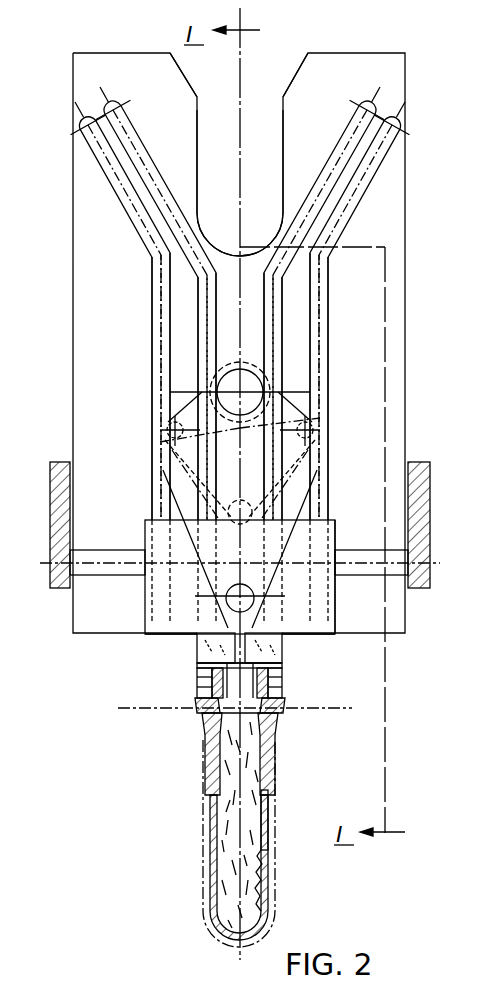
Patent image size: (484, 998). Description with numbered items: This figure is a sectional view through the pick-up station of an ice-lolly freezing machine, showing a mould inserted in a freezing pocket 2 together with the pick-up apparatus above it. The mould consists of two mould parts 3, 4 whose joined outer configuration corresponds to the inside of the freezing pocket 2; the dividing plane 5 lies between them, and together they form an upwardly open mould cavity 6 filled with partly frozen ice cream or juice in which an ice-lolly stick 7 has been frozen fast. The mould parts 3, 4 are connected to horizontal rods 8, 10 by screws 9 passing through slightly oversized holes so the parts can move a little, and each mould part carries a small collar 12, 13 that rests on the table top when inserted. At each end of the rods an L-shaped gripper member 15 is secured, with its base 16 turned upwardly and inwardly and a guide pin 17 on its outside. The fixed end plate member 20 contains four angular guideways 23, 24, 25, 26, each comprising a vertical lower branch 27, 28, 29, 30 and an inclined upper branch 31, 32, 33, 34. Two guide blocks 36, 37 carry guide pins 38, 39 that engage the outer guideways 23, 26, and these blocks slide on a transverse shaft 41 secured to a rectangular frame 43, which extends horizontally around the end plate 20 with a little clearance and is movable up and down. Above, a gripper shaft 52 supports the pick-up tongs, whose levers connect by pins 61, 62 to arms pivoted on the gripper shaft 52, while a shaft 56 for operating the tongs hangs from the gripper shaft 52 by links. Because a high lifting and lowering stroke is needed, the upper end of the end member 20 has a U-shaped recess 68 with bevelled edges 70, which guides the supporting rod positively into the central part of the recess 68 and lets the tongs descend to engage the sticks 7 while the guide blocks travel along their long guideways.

The freezing pocket 2 is at (266, 836).
The mould part 3 is at (210, 785).
The mould part 4 is at (278, 772).
The dividing plane 5 is at (255, 872).
The mould cavity 6 is at (262, 810).
The ice-lolly stick 7 is at (268, 678).
The horizontal rod 8 is at (215, 690).
The screw 9 is at (200, 684).
The rod 10 is at (281, 694).
The collar 12 is at (205, 712).
The collar 13 is at (285, 713).
The L-shaped gripper member 15 is at (200, 666).
The base 16 is at (239, 680).
The guide pin 17 is at (200, 650).
The end plate member 20 is at (397, 238).
The guideway 23 is at (152, 296).
The guideway 24 is at (205, 305).
The guideway 25 is at (273, 300).
The guideway 26 is at (320, 318).
The vertical lower branch 27 is at (161, 345).
The vertical lower branch 28 is at (207, 346).
The vertical lower branch 29 is at (276, 350).
The vertical lower branch 30 is at (320, 357).
The inclined upper branch 31 is at (116, 182).
The inclined upper branch 32 is at (140, 159).
The inclined upper branch 33 is at (340, 135).
The inclined upper branch 34 is at (362, 188).
The guide block 36 is at (144, 598).
The guide block 37 is at (336, 597).
The guide pin 38 is at (155, 626).
The guide pin 39 is at (328, 628).
The transverse shaft 41 is at (116, 530).
The rectangular frame 43 is at (56, 492).
The gripper shaft 52 is at (242, 376).
The shaft for operating the tongs 56 is at (248, 506).
The pin 61 is at (166, 433).
The pin 62 is at (314, 431).
The U-shaped recess 68 is at (284, 140).
The bevelled edge 70 is at (186, 80).